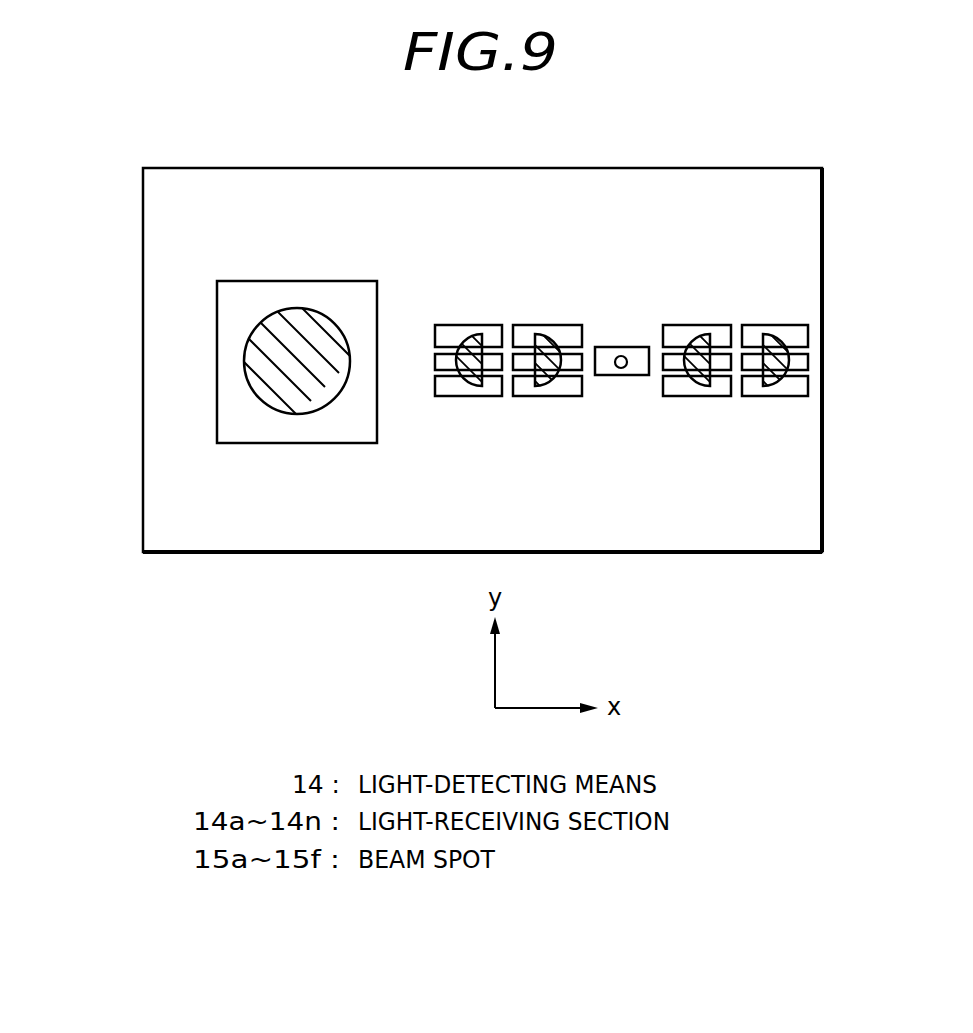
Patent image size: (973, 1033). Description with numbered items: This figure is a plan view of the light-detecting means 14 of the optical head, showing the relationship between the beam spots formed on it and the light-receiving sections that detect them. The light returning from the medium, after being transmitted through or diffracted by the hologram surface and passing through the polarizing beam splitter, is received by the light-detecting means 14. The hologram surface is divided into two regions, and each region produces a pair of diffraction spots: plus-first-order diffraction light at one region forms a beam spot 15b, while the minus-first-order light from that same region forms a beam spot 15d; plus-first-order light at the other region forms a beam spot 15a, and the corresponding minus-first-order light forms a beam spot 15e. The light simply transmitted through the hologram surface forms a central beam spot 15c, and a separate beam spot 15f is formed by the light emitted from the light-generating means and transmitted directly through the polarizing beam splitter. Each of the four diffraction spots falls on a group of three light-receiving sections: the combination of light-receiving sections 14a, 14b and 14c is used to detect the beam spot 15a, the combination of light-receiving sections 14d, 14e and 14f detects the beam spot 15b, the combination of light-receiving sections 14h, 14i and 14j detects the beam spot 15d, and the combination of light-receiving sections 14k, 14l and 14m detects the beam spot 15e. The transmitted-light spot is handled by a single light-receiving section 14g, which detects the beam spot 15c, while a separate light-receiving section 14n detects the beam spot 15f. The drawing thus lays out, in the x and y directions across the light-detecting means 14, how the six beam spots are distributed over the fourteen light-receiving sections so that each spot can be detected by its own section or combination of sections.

The light-detecting means 14 is at (140, 405).
The light-receiving section 14a is at (790, 333).
The light-receiving section 14b is at (805, 355).
The light-receiving section 14c is at (802, 380).
The light-receiving section 14d is at (723, 332).
The light-receiving section 14e is at (728, 362).
The light-receiving section 14f is at (717, 387).
The light-receiving section 14g is at (640, 350).
The light-receiving section 14h is at (525, 332).
The light-receiving section 14i is at (525, 358).
The light-receiving section 14j is at (522, 388).
The light-receiving section 14k is at (452, 333).
The light-receiving section 14l is at (442, 362).
The light-receiving section 14m is at (440, 388).
The light-receiving section 14n is at (247, 434).
The beam spot 15a is at (783, 386).
The beam spot 15b is at (687, 386).
The beam spot 15c is at (618, 368).
The beam spot 15d is at (555, 386).
The beam spot 15e is at (463, 385).
The beam spot 15f is at (257, 355).